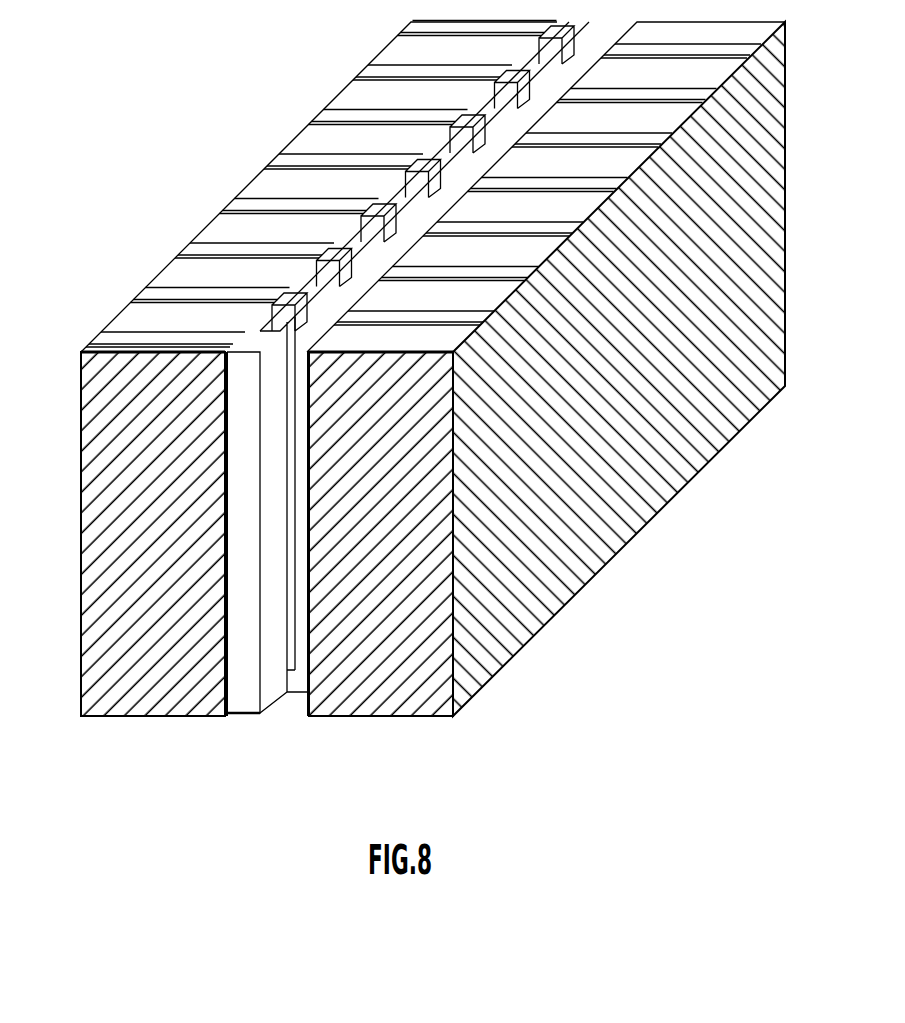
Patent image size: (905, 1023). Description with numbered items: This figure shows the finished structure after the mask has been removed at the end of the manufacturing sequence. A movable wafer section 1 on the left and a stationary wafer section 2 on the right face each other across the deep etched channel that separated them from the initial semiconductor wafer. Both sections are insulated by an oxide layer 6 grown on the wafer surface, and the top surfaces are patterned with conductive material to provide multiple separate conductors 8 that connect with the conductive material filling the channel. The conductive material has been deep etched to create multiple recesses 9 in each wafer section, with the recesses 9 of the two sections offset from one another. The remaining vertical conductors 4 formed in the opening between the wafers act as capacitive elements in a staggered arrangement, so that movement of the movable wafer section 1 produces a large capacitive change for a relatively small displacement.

The movable wafer section 1 is at (115, 413).
The stationary wafer section 2 is at (766, 134).
The vertical conductors 4 is at (302, 685).
The oxide layer 6 is at (178, 275).
The separate conductors 8 is at (340, 118).
The recesses 9 is at (372, 232).